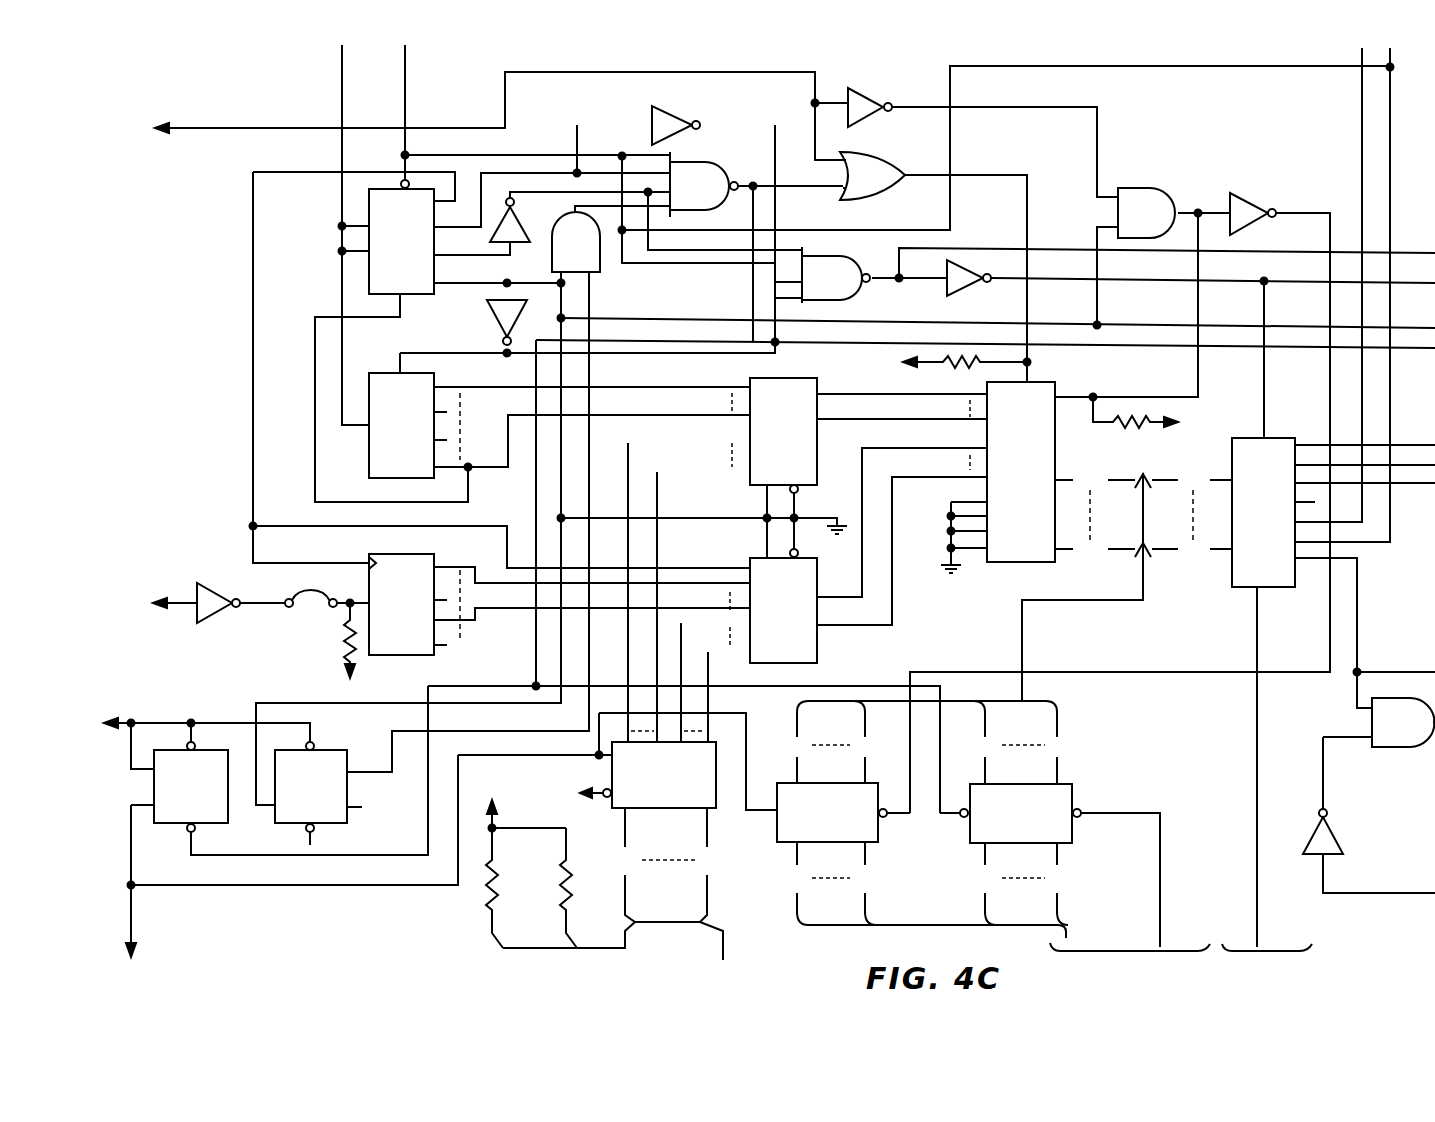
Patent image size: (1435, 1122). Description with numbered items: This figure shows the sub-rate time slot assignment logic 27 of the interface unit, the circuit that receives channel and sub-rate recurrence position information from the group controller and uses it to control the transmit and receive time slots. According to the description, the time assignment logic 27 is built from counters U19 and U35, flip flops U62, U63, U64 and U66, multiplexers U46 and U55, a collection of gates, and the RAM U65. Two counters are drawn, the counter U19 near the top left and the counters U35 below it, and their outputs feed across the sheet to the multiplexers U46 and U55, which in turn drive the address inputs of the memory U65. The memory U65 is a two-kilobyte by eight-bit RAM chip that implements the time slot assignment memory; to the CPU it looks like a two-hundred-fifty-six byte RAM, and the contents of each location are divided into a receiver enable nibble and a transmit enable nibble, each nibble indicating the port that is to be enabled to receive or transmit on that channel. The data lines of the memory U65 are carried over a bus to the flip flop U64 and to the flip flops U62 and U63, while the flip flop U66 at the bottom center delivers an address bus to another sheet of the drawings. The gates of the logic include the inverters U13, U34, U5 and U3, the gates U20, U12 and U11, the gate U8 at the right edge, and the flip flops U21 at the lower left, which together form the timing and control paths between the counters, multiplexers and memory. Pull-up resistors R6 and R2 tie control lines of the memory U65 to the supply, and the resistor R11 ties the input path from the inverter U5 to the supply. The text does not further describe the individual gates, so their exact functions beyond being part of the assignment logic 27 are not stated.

The sub-rate time slot assignment logic 27 is at (754, 522).
The counter U19 is at (421, 249).
The counter U35 is at (408, 528).
The inverter U13 is at (745, 206).
The NAND gate U20 is at (770, 227).
The AND gate U12 is at (863, 230).
The OR gate U11 is at (872, 176).
The inverter U34 is at (1253, 204).
The resistor R6 is at (941, 372).
The resistor R2 is at (1155, 425).
The multiplexer U46 is at (783, 435).
The multiplexer U55 is at (783, 606).
The RAM U65 is at (1019, 484).
The flip flop U64 is at (1263, 512).
The AND gate U8 is at (1379, 722).
The inverter U3 is at (1369, 827).
The flip-flop U21 is at (250, 787).
The flip flop U66 is at (659, 775).
The flip flop U62 is at (843, 812).
The flip flop U63 is at (1010, 813).
The inverter U5 is at (179, 612).
The resistor R11 is at (339, 652).